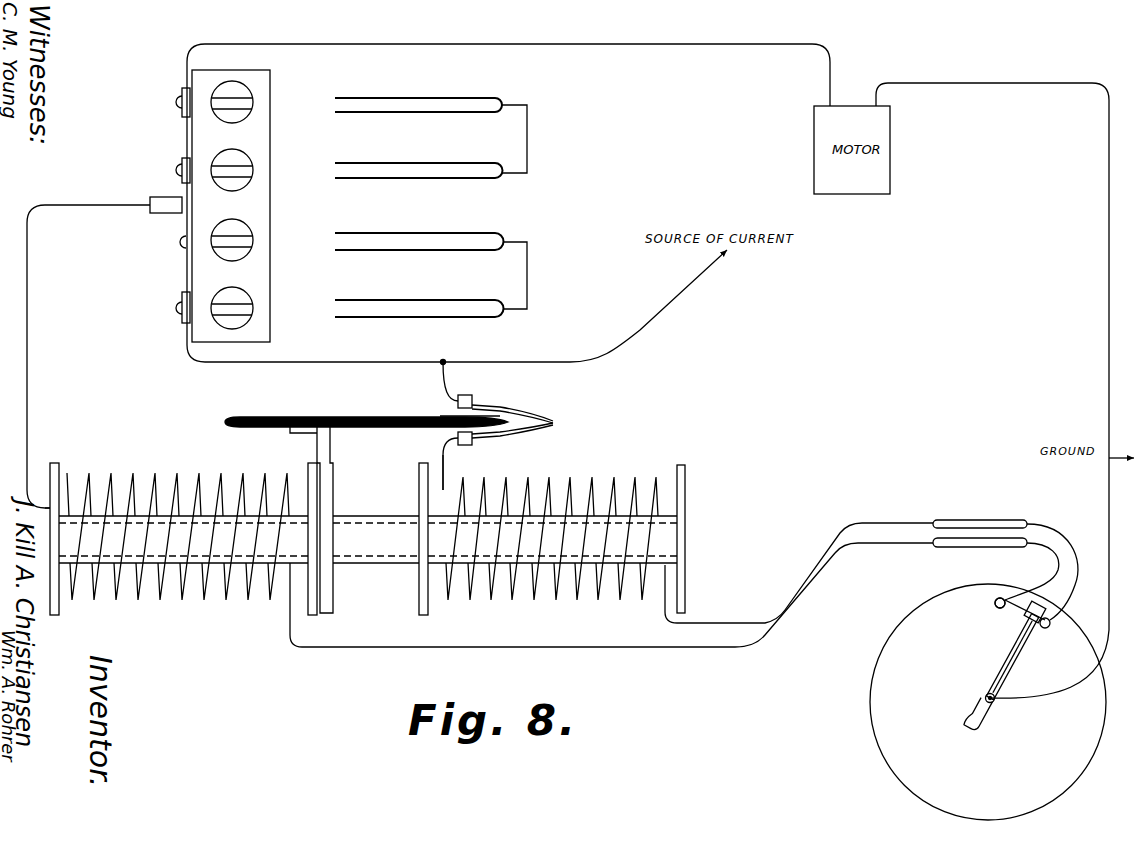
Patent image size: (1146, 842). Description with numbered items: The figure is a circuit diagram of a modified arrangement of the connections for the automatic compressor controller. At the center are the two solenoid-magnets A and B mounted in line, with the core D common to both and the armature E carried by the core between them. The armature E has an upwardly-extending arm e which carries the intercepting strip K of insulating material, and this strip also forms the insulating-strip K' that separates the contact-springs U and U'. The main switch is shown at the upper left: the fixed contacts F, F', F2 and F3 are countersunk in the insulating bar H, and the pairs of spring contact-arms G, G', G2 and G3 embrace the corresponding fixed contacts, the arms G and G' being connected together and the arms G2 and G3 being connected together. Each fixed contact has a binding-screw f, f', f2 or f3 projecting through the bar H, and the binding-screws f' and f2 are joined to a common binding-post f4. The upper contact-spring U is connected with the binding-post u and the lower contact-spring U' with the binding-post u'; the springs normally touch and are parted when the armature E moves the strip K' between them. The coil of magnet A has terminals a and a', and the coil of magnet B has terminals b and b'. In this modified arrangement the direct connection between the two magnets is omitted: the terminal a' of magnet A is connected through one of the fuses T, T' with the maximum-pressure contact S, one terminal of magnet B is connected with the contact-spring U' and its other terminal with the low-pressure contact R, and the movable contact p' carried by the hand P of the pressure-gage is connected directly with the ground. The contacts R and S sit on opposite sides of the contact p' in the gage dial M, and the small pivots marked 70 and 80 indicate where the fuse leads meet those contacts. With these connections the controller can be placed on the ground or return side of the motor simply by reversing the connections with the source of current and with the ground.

The fixed contact F3 is at (231, 96).
The fixed contact F2 is at (231, 166).
The fixed contact F' is at (233, 228).
The fixed contact F is at (233, 296).
The binding-screw f3 is at (176, 102).
The binding-screw f2 is at (176, 170).
The common binding-post f4 is at (162, 212).
The binding-screw f' is at (167, 245).
The binding-screw f is at (167, 307).
The insulating bar H is at (300, 166).
The spring contact-arms G3 is at (420, 97).
The spring contact-arms G2 is at (420, 162).
The spring contact-arms G' is at (431, 257).
The spring contact-arms G is at (419, 294).
The intercepting strip K is at (366, 405).
The insulating-strip K' is at (454, 406).
The arm e is at (315, 437).
The armature E is at (336, 498).
The binding-post u is at (460, 385).
The binding-post u' is at (467, 461).
The contact-spring U is at (512, 399).
The contact-spring U' is at (512, 439).
The solenoid-magnet A is at (183, 528).
The solenoid-magnet B is at (552, 534).
The core D is at (368, 539).
The terminal a is at (37, 519).
The terminal a' is at (595, 595).
The terminal b is at (784, 576).
The terminal b' is at (452, 472).
The fuse T is at (1005, 558).
The fuse T' is at (996, 569).
The contact 70 is at (990, 614).
The movable contact p' is at (1013, 601).
The minimum-pressure contact R is at (1010, 620).
The contact 80 is at (1055, 629).
The maximum-pressure contact S is at (1045, 630).
The meter dial M is at (967, 702).
The hand P is at (989, 670).